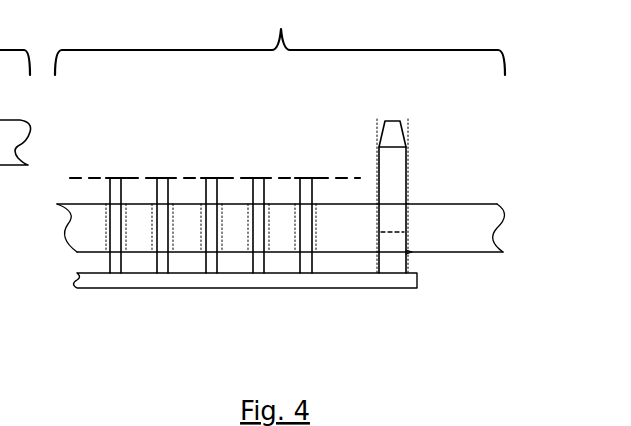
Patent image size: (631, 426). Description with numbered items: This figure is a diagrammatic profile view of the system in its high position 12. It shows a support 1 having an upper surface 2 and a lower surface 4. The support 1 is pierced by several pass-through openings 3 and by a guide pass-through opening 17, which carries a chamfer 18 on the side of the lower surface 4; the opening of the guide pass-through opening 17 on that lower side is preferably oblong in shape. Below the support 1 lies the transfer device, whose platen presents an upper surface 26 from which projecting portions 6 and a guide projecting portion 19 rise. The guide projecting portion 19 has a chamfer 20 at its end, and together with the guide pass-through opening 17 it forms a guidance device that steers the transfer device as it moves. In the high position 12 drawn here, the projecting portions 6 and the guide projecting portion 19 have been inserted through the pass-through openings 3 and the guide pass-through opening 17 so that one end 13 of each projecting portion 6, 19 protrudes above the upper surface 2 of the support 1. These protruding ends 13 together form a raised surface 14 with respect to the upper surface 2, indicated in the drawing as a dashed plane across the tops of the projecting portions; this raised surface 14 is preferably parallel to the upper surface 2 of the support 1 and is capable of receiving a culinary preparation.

The support 1 is at (463, 232).
The upper surface 2 is at (467, 201).
The pass-through openings 3 is at (126, 228).
The lower surface 4 is at (443, 254).
The projecting portions 6 is at (212, 192).
The high position 12 is at (280, 37).
The end 13 is at (215, 181).
The raised surface 14 is at (275, 176).
The guide pass-through opening 17 is at (393, 223).
The chamfer 18 is at (410, 255).
The guide projecting portion 19 is at (393, 184).
The chamfer 20 is at (380, 131).
The upper surface 26 is at (96, 262).